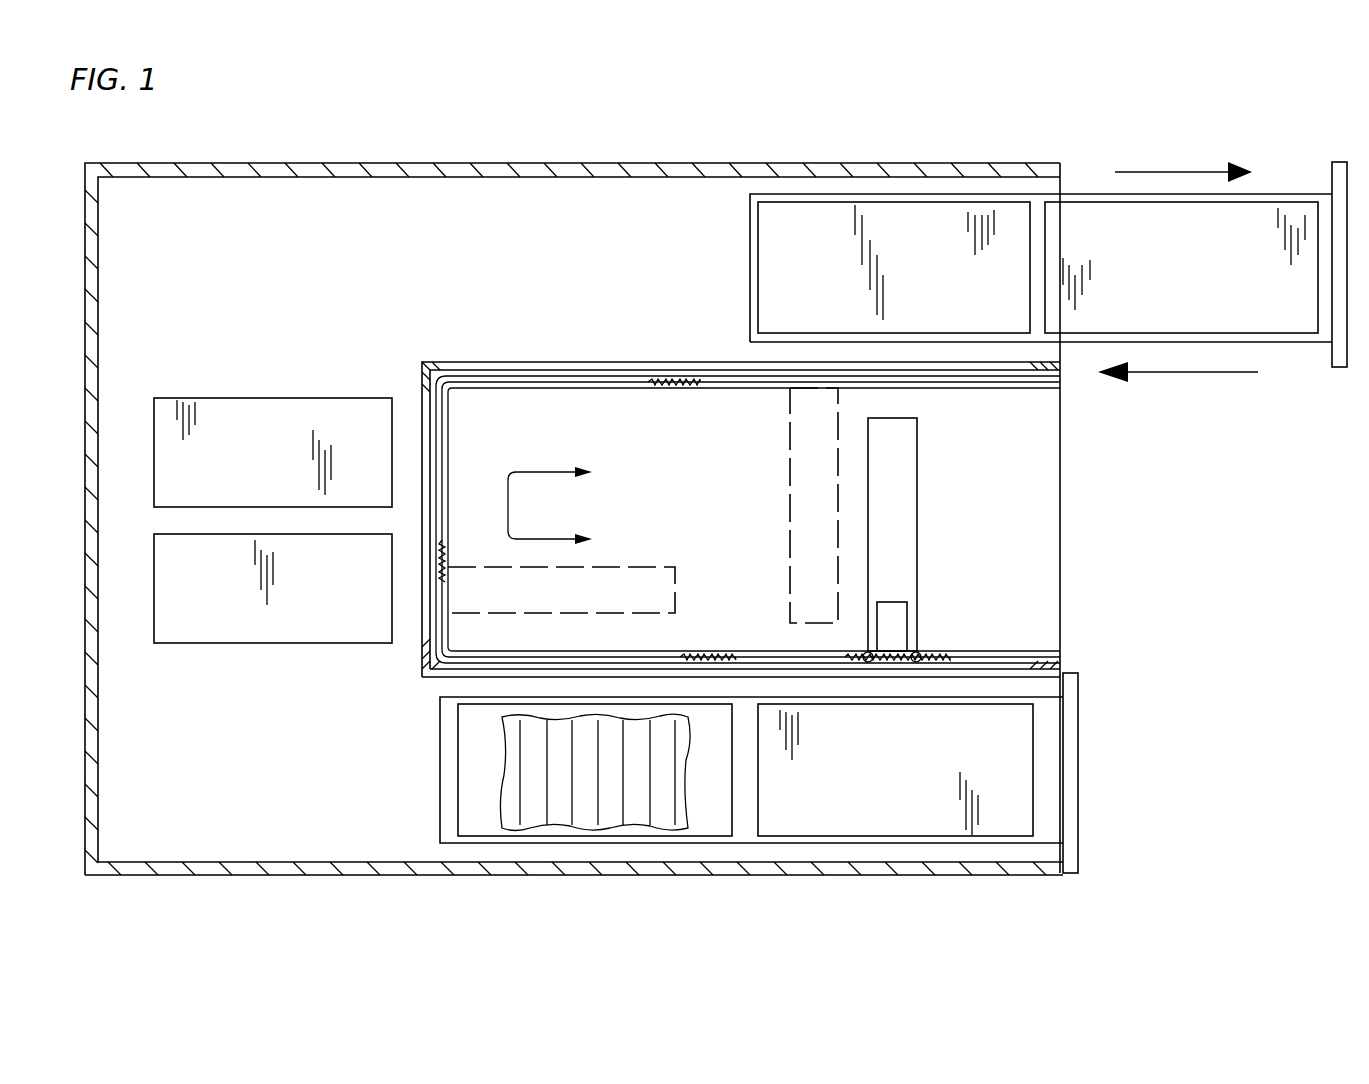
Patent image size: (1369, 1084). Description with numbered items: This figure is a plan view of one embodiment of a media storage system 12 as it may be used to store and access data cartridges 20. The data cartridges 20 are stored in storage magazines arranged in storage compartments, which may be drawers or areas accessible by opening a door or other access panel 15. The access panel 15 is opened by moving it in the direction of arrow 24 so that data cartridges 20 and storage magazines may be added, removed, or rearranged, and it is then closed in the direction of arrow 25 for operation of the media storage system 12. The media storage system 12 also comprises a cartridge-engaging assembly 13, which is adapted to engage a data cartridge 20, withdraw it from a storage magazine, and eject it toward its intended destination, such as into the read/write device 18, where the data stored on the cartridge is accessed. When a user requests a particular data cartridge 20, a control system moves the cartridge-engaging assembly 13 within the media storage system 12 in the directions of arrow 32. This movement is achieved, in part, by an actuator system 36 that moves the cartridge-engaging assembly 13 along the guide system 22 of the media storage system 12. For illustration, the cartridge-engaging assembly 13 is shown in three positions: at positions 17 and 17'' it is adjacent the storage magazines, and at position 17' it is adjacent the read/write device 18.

The media storage system 12 is at (196, 156).
The cartridge-engaging assembly 13 is at (937, 530).
The access panel 15 is at (1332, 355).
The position 17 is at (924, 534).
The position 17' is at (573, 573).
The position 17'' is at (789, 505).
The read/write device 18 is at (185, 534).
The data cartridge 20 is at (597, 812).
The guide system 22 is at (1036, 645).
The arrow 24 is at (1115, 172).
The arrow 25 is at (1150, 372).
The arrow 32 is at (508, 505).
The actuator system 36 is at (918, 651).